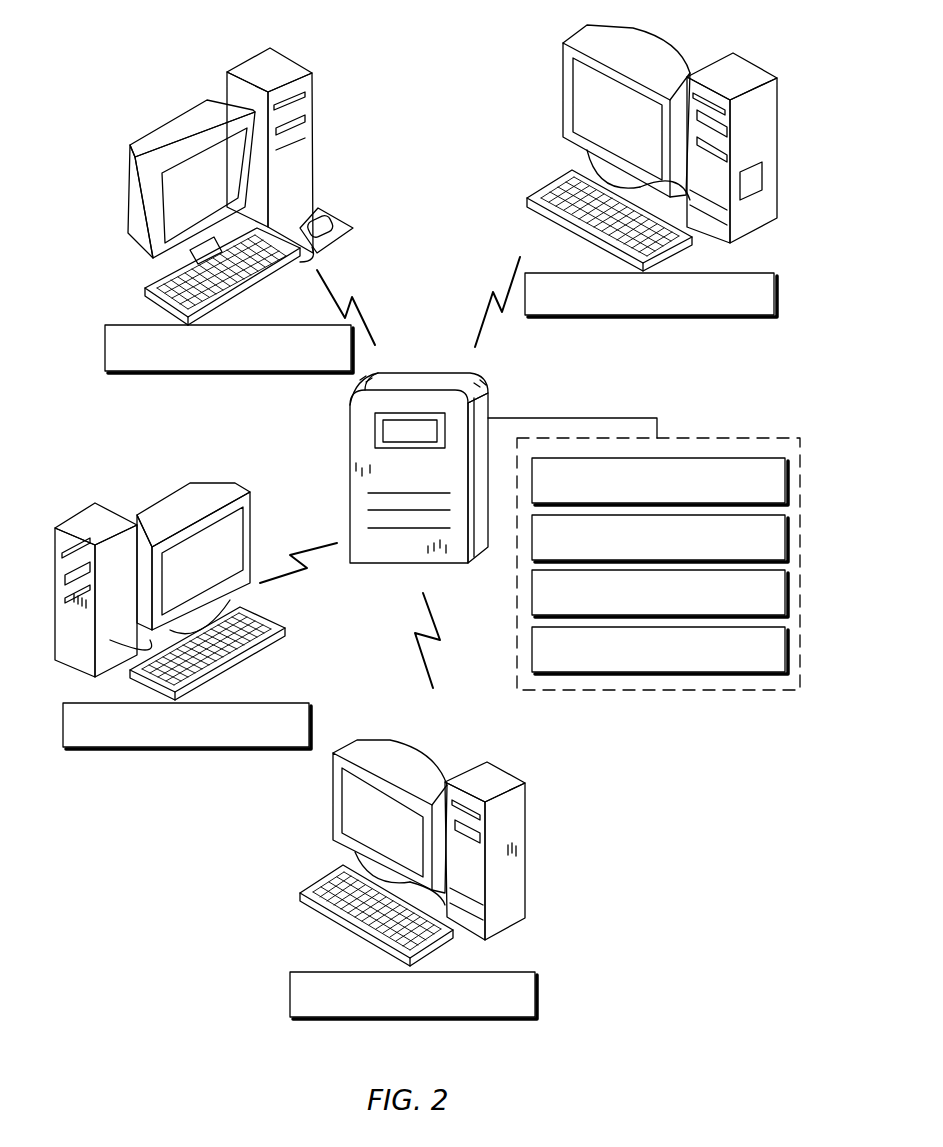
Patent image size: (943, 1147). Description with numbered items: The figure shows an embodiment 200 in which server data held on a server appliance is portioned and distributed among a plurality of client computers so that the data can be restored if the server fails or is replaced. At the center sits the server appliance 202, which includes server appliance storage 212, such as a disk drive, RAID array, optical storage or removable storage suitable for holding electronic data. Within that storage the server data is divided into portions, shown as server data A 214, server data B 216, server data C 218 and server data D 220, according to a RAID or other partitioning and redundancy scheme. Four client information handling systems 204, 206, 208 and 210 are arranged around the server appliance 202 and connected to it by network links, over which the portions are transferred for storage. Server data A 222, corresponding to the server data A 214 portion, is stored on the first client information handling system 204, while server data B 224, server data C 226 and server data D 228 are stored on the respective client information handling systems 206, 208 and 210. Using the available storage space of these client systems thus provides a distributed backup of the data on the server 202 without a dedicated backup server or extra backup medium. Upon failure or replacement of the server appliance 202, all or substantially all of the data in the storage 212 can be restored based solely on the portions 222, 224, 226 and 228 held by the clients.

The embodiment 200 is at (158, 946).
The server appliance 202 is at (387, 372).
The first client information handling system 204 is at (647, 33).
The client information handling system 206 is at (177, 122).
The client information handling system 208 is at (100, 503).
The client information handling system 210 is at (402, 748).
The server appliance storage 212 is at (680, 532).
The server data A 214 is at (785, 463).
The server data B 216 is at (785, 520).
The server data C 218 is at (785, 575).
The server data D 220 is at (785, 632).
The server data A 222 is at (780, 293).
The server data B 224 is at (105, 350).
The server data C 226 is at (63, 727).
The server data D 228 is at (290, 998).